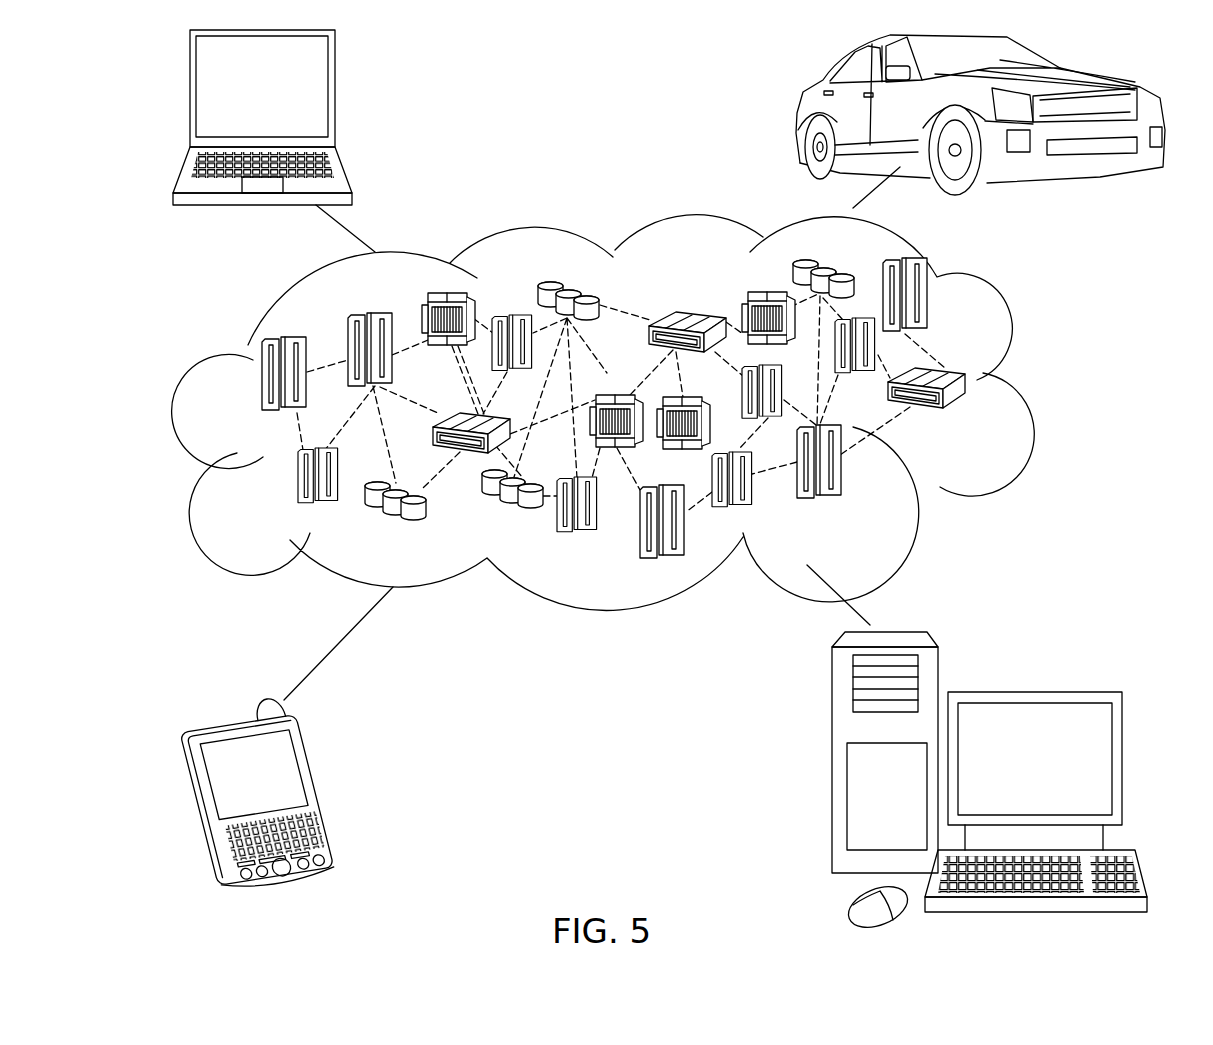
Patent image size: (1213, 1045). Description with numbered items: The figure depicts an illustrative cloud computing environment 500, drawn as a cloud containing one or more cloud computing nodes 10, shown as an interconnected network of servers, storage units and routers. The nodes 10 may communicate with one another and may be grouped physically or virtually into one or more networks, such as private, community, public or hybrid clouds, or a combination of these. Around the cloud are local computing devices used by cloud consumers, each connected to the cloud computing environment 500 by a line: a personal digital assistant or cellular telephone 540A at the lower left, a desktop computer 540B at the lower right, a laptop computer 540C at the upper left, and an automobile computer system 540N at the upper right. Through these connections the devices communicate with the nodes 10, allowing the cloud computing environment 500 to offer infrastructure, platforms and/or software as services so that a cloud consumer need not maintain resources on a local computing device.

The cloud computing environment 500 is at (1030, 383).
The cloud computing nodes 10 is at (984, 421).
The personal digital assistant (PDA) or cellular telephone 540A is at (330, 790).
The desktop computer 540B is at (1031, 692).
The laptop computer 540C is at (336, 95).
The automobile computer system 540N is at (800, 110).